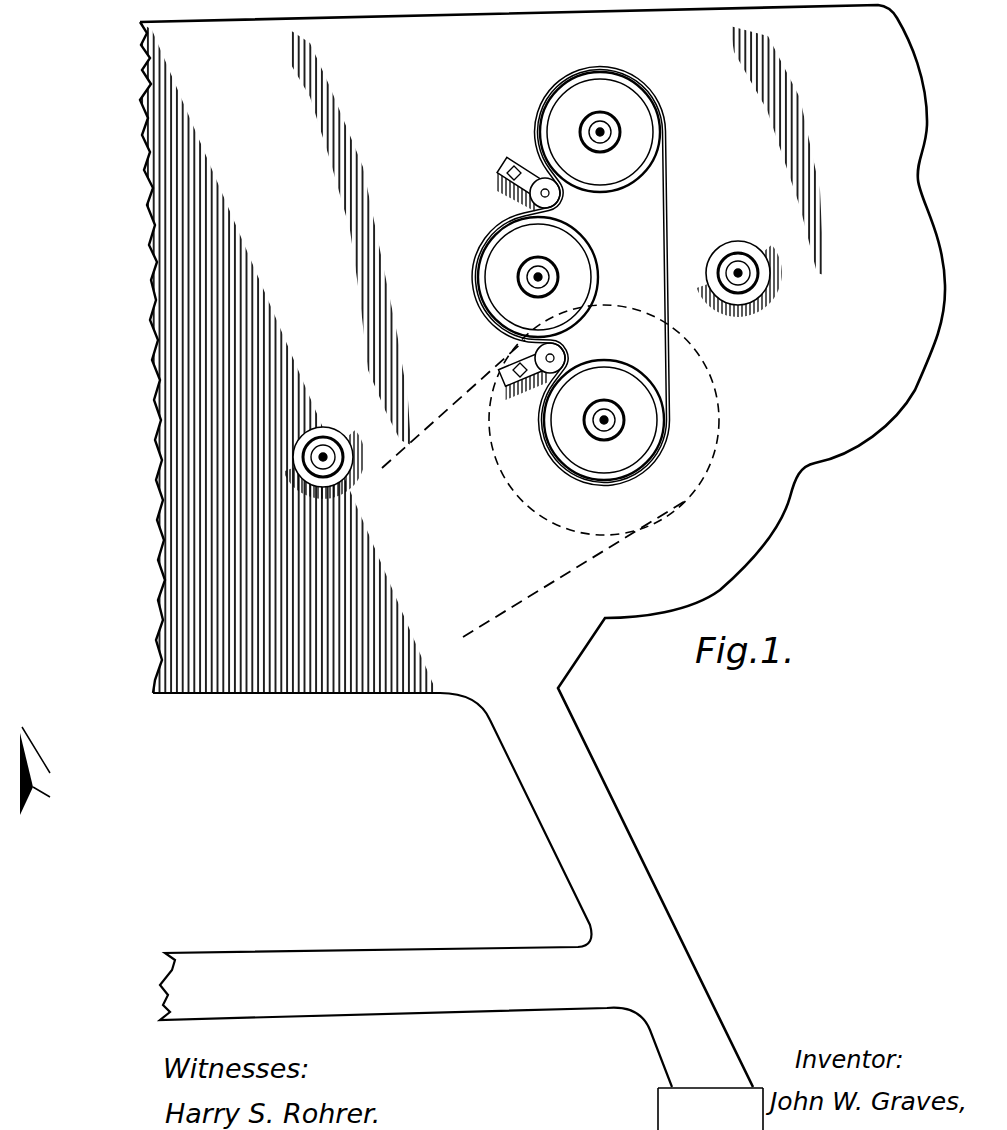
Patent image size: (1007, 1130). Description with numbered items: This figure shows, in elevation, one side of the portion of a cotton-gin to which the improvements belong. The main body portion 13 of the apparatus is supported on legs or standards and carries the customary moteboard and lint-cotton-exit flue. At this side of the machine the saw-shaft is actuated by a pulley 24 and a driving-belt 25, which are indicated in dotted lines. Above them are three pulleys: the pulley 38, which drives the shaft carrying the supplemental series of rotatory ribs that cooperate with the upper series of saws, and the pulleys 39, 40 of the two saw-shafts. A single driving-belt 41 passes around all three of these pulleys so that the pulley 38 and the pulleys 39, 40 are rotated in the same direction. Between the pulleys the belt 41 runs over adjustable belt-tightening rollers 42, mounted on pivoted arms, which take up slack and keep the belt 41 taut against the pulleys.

The main body portion 13 is at (542, 567).
The pulley 24 is at (632, 420).
The driving-belt 25 is at (534, 600).
The pulley 38 is at (600, 132).
The pulley 39 is at (538, 277).
The pulley 40 is at (604, 420).
The driving-belt 41 is at (667, 220).
The belt-tightening rollers 42 is at (530, 203).